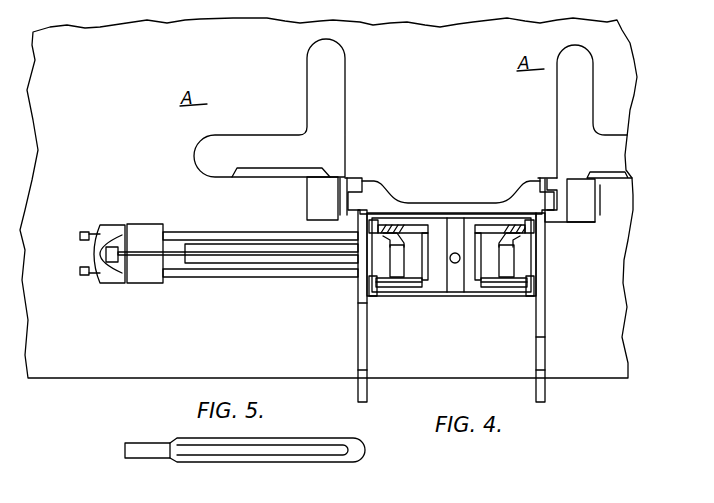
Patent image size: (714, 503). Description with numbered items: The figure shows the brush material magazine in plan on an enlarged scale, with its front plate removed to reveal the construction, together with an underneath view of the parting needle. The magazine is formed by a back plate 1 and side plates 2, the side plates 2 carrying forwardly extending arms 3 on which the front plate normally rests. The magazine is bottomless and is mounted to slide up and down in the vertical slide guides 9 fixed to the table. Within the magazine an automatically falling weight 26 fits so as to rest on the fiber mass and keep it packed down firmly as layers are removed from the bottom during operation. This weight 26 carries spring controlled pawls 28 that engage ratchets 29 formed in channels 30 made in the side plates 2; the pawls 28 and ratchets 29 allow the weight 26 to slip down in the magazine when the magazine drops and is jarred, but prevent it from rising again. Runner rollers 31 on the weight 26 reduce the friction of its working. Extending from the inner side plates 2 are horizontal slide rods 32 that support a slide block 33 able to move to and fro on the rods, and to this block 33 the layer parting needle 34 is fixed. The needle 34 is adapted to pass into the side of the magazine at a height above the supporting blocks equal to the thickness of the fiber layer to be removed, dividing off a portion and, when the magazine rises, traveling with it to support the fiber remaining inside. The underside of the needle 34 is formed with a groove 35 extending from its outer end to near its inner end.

In FIG. 4, the back plate 1 is at (433, 207).
In FIG. 4, the side plates 2 is at (361, 285).
In FIG. 4, the forwardly extending arms 3 is at (368, 352).
In FIG. 4, the vertical slide guides 9 is at (342, 184).
In FIG. 4, the automatically falling weight 26 is at (468, 293).
In FIG. 4, the spring controlled pawls 28 is at (398, 284).
In FIG. 4, the ratchets 29 is at (370, 294).
In FIG. 4, the channels 30 is at (374, 217).
In FIG. 4, the runner rollers 31 is at (387, 226).
In FIG. 4, the horizontal slide rods 32 is at (218, 232).
In FIG. 4, the slide block 33 is at (132, 253).
In FIG. 5, the layer parting needle 34 is at (330, 462).
In FIG. 5, the groove 35 is at (272, 452).